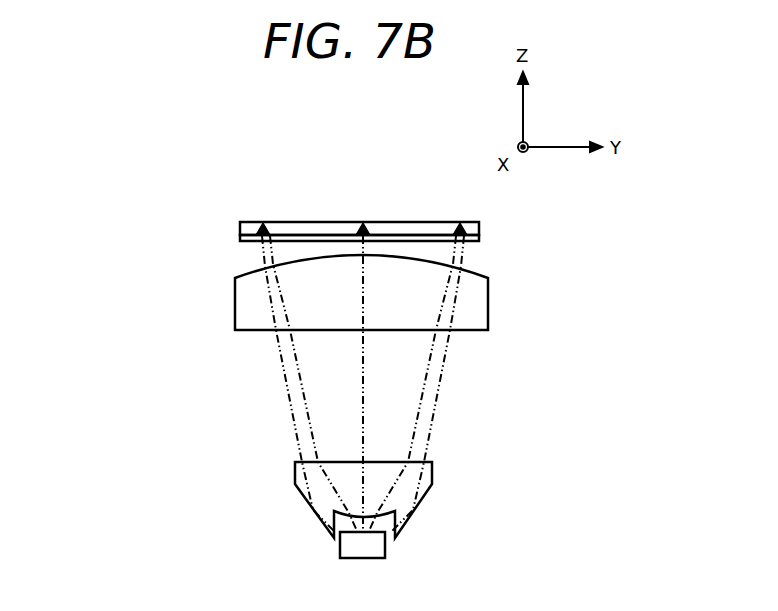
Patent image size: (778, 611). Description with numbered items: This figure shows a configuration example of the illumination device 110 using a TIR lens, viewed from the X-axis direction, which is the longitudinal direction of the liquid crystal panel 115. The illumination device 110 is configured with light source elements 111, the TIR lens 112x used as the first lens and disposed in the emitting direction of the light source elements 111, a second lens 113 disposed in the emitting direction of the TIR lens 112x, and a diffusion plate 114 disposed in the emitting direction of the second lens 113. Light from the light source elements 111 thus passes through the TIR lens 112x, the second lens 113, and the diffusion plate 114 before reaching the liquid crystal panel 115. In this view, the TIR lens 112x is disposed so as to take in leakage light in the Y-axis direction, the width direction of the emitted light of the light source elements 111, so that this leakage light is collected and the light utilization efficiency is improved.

The illumination device 110 is at (133, 231).
The light source elements 111 is at (340, 545).
The TIR lens 112x is at (295, 476).
The second lens 113 is at (235, 315).
The diffusion plate 114 is at (240, 238).
The liquid crystal panel 115 is at (240, 222).